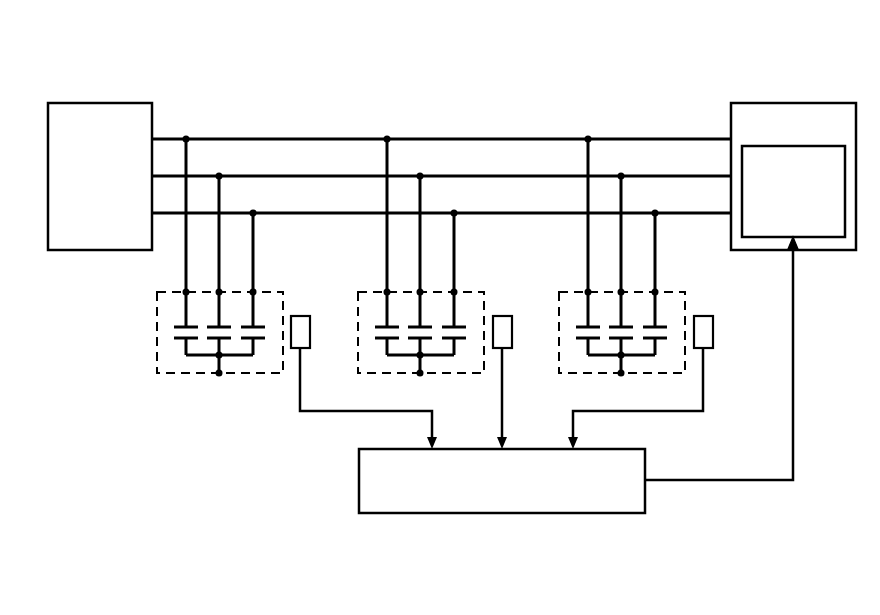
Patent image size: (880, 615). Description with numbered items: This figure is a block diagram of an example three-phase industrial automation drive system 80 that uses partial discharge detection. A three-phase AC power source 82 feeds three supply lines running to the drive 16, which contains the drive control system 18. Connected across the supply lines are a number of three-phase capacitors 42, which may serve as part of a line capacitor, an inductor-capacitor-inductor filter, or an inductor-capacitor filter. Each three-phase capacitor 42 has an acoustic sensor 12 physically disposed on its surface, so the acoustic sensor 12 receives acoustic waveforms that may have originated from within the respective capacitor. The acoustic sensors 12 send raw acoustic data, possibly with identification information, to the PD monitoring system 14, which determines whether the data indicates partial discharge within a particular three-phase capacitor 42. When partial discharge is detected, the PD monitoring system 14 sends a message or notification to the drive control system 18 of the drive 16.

The three-phase industrial automation drive system 80 is at (137, 43).
The three-phase AC power source 82 is at (98, 103).
The drive 16 is at (793, 173).
The drive control system 18 is at (816, 237).
The three-phase capacitor 42 is at (270, 292).
The acoustic sensor 12 is at (310, 328).
The PD monitoring system 14 is at (359, 484).